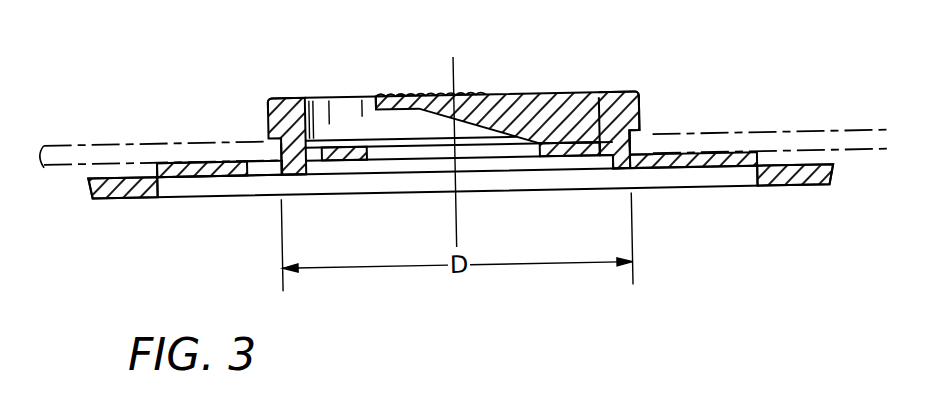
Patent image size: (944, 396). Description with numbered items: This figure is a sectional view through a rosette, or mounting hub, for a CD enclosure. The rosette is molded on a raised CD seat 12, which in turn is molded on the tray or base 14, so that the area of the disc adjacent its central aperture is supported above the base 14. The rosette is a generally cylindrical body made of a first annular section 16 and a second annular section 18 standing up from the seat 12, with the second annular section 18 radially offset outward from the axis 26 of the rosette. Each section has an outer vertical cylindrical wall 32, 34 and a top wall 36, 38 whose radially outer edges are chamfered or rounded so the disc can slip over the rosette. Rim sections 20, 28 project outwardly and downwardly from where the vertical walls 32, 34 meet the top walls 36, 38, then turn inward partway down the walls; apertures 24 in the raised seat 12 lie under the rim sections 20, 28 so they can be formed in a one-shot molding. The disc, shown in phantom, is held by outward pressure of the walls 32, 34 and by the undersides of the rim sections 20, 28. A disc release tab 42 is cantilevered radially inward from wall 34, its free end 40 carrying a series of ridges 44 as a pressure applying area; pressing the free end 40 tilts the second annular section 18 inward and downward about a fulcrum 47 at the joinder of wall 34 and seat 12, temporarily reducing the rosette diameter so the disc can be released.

The raised CD seat 12 is at (753, 155).
The base 14 is at (128, 195).
The first annular section 16 is at (292, 130).
The second annular section 18 is at (622, 138).
The rim section 20 is at (267, 112).
The apertures 24 is at (264, 172).
The axis 26 is at (461, 206).
The rim section 28 is at (643, 107).
The outer vertical cylindrical wall 32 is at (277, 155).
The outer vertical cylindrical wall 34 is at (652, 133).
The top wall 36 is at (283, 96).
The top wall 38 is at (603, 94).
The free end 40 is at (420, 95).
The disc release tab 42 is at (521, 95).
The ridges 44 is at (397, 96).
The fulcrum 47 is at (628, 168).